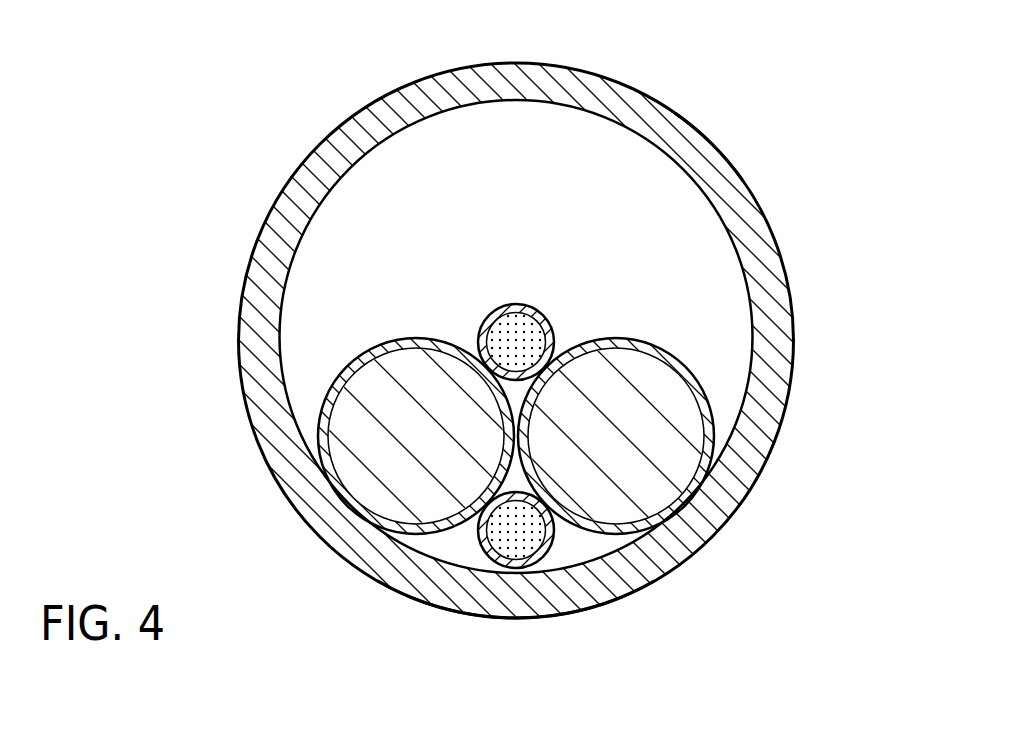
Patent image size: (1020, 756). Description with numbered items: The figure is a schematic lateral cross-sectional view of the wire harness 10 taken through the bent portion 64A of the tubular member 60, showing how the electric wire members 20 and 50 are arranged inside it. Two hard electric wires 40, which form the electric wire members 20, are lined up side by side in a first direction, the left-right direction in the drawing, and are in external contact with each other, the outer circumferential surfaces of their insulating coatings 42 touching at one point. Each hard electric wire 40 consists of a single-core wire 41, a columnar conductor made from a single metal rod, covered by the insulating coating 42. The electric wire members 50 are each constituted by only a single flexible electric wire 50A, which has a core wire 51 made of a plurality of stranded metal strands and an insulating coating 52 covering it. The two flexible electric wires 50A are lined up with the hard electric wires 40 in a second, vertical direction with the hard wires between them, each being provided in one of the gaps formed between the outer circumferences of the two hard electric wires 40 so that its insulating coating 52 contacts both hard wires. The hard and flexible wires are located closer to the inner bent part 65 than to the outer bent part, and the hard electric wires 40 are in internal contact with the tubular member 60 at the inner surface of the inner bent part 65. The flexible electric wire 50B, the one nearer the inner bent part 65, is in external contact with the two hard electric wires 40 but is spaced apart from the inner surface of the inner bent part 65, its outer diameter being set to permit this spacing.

The wire harness 10 is at (785, 70).
The tubular member 60 is at (292, 170).
The bent portion 64A is at (716, 148).
The inner bent part 65 is at (695, 614).
The hard electric wire 40 is at (198, 410).
The single-core wire 41 is at (352, 415).
The insulating coating 42 is at (325, 450).
The electric wire member 20 is at (713, 410).
The electric wire member 50 is at (510, 294).
The flexible electric wire 50A is at (552, 255).
The core wire 51 is at (497, 313).
The insulating coating 52 is at (541, 310).
The flexible electric wire 50B is at (482, 542).